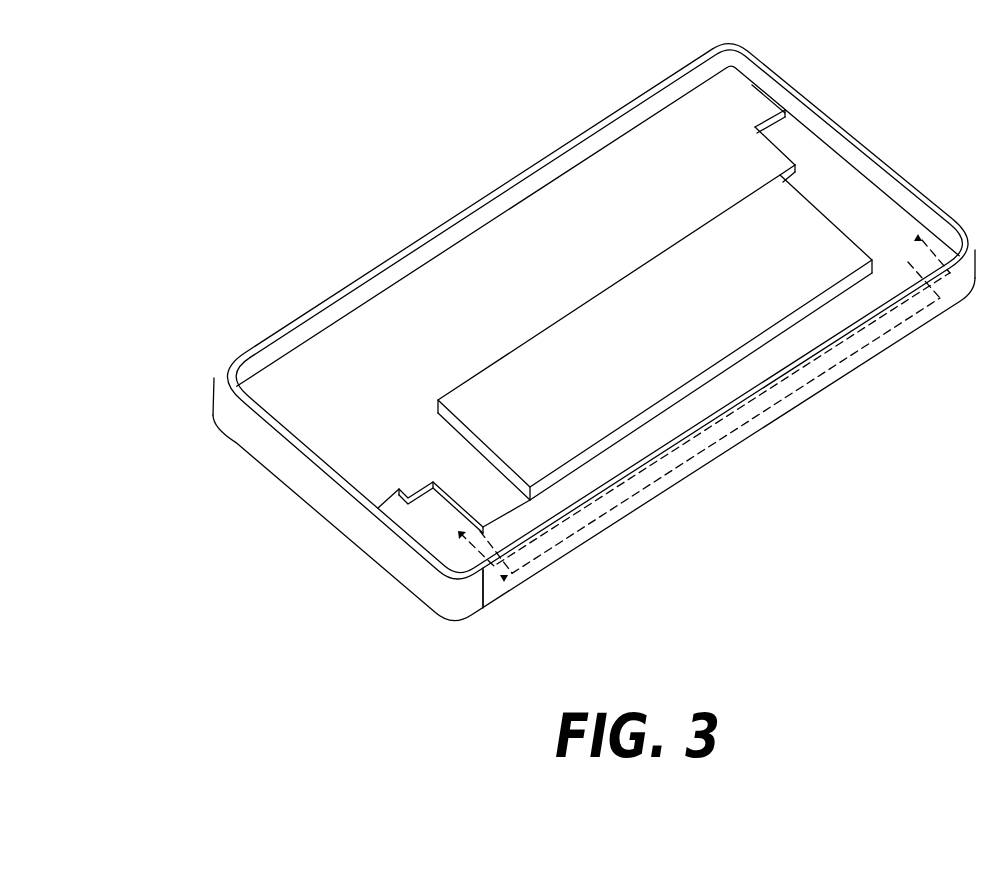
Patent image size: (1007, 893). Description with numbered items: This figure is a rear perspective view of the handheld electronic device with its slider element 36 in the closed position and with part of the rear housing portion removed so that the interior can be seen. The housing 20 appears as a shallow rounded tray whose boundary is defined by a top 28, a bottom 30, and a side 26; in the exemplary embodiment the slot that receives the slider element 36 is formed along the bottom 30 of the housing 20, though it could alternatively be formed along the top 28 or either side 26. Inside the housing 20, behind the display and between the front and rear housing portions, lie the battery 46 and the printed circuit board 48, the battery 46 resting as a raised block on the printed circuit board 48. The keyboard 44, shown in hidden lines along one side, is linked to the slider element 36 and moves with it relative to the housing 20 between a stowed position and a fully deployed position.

The housing 20 is at (256, 469).
The side 26 is at (219, 402).
The top 28 is at (453, 218).
The bottom 30 is at (483, 600).
The slider element 36 is at (499, 613).
The keyboard 44 is at (933, 243).
The battery 46 is at (650, 362).
The printed circuit board 48 is at (558, 262).